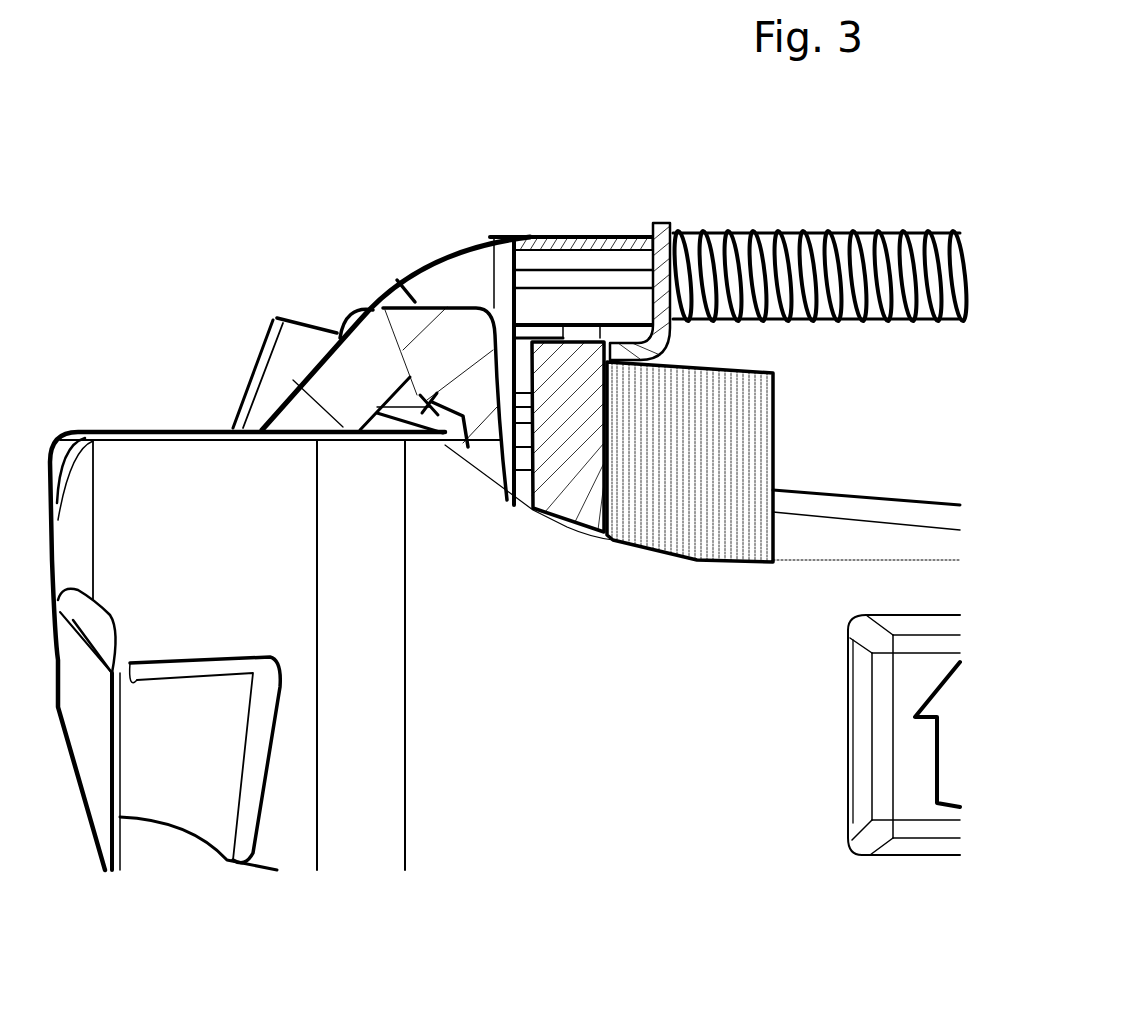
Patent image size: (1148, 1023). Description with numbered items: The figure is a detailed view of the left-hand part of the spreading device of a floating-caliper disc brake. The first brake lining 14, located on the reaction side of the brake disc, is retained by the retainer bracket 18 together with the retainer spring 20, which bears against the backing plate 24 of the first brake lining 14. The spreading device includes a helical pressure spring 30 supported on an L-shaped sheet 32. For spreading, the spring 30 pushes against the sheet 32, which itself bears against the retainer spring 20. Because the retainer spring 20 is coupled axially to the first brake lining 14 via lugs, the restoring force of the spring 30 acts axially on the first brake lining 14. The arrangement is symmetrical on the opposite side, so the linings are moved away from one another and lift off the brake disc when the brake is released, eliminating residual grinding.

The first brake lining 14 is at (545, 245).
The retainer bracket 18 is at (420, 283).
The retainer spring 20 is at (683, 413).
The backing plate 24 is at (568, 510).
The spring 30 is at (780, 230).
The sheet 32 is at (657, 227).